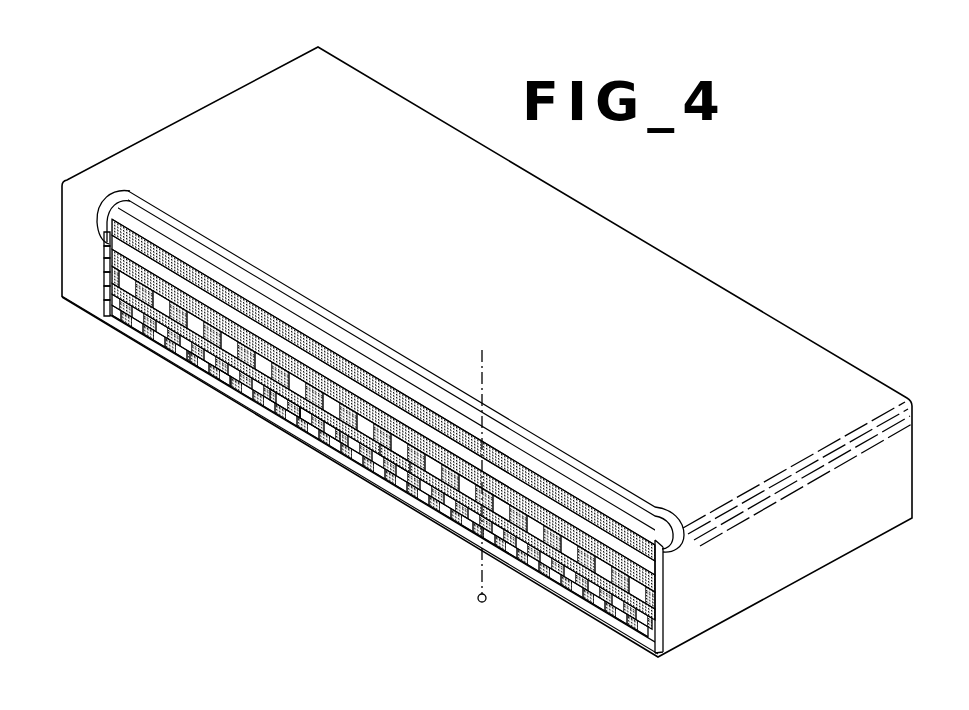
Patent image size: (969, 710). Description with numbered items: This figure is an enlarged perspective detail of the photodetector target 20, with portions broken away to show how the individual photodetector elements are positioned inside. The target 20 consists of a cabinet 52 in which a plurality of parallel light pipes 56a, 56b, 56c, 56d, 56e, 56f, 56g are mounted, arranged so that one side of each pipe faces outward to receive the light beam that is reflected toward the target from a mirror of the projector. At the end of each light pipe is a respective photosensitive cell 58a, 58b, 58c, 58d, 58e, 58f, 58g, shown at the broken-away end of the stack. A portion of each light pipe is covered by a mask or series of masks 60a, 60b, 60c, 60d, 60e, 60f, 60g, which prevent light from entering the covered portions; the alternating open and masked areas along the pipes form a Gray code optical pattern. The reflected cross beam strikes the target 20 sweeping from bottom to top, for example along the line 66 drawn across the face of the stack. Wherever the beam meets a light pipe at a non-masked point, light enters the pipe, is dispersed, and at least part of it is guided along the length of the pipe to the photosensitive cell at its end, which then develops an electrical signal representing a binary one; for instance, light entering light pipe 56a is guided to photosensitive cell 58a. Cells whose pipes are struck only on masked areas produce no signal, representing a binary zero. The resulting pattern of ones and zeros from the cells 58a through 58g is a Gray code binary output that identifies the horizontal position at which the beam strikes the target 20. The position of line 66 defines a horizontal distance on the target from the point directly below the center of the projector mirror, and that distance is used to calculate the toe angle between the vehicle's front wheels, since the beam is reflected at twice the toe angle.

The target 20 is at (487, 352).
The cabinet 52 is at (656, 264).
The light pipe 56a is at (495, 462).
The light pipe 56b is at (520, 470).
The light pipe 56c is at (548, 492).
The light pipe 56d is at (570, 547).
The light pipe 56e is at (572, 560).
The light pipe 56f is at (607, 598).
The light pipe 56g is at (633, 612).
The photosensitive cell 58a is at (113, 212).
The photosensitive cell 58b is at (104, 232).
The photosensitive cell 58c is at (108, 258).
The photosensitive cell 58d is at (106, 273).
The photosensitive cell 58e is at (104, 288).
The photosensitive cell 58f is at (114, 318).
The photosensitive cell 58g is at (110, 317).
The mask 60a is at (245, 297).
The mask 60b is at (608, 527).
The mask 60c is at (160, 287).
The mask 60d is at (365, 430).
The mask 60e is at (391, 458).
The mask 60f is at (290, 413).
The mask 60g is at (213, 373).
The line 66 is at (488, 352).